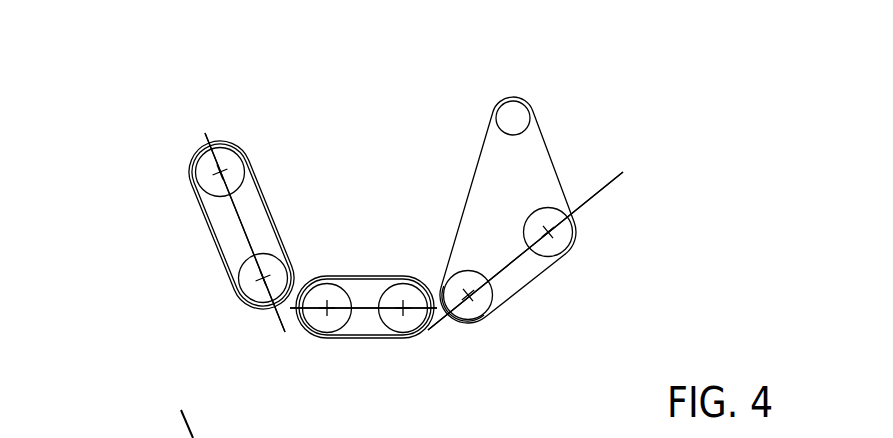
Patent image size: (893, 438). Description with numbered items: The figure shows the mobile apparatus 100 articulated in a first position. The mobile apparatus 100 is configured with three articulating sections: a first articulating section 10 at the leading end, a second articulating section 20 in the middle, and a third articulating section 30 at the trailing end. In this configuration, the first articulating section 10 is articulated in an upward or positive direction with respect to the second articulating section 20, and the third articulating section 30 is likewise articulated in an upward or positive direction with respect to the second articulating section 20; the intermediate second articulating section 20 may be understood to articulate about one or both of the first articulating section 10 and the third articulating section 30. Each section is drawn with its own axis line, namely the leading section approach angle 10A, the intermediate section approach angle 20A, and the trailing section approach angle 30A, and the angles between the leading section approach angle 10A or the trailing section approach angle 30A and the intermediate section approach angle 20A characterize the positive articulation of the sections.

The mobile apparatus 100 is at (137, 100).
The first articulating section 10 is at (456, 185).
The leading section approach angle 10A is at (510, 267).
The second articulating section 20 is at (368, 264).
The intermediate section approach angle 20A is at (362, 308).
The third articulating section 30 is at (280, 203).
The trailing section approach angle 30A is at (240, 226).